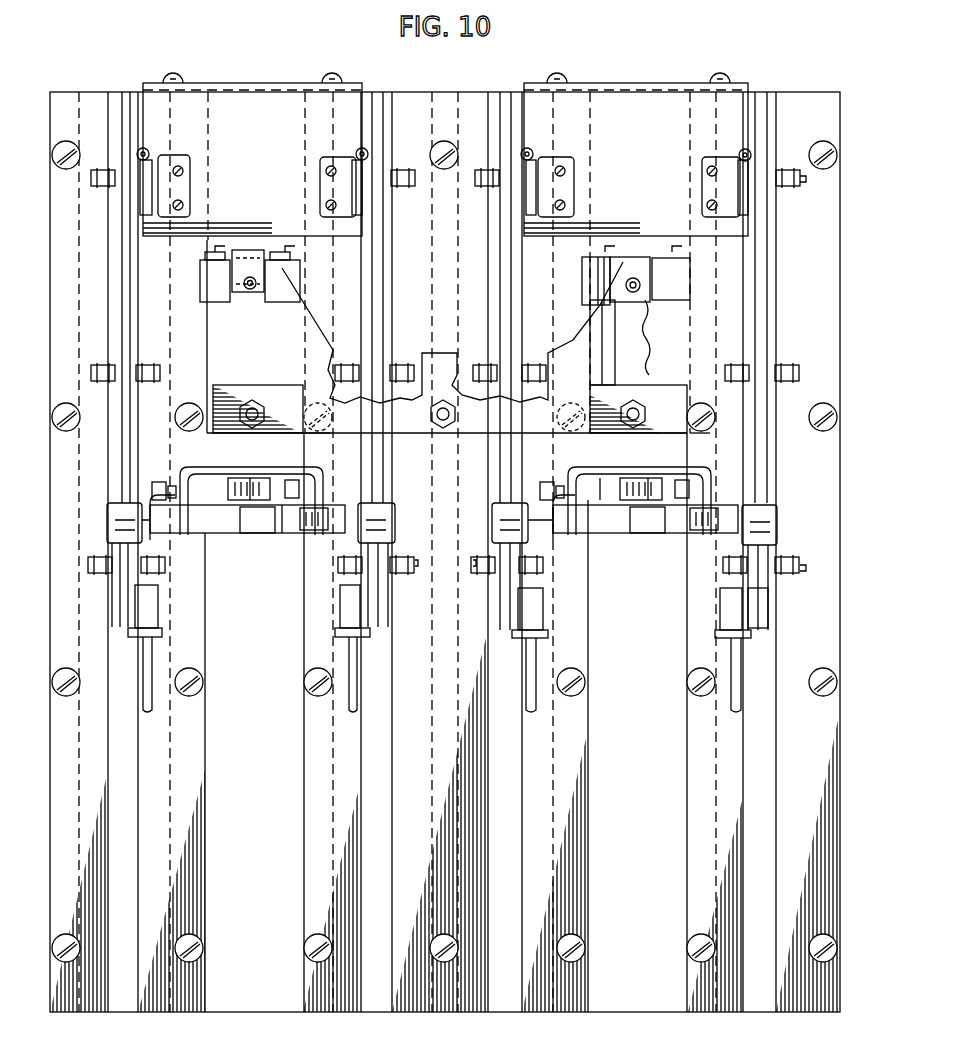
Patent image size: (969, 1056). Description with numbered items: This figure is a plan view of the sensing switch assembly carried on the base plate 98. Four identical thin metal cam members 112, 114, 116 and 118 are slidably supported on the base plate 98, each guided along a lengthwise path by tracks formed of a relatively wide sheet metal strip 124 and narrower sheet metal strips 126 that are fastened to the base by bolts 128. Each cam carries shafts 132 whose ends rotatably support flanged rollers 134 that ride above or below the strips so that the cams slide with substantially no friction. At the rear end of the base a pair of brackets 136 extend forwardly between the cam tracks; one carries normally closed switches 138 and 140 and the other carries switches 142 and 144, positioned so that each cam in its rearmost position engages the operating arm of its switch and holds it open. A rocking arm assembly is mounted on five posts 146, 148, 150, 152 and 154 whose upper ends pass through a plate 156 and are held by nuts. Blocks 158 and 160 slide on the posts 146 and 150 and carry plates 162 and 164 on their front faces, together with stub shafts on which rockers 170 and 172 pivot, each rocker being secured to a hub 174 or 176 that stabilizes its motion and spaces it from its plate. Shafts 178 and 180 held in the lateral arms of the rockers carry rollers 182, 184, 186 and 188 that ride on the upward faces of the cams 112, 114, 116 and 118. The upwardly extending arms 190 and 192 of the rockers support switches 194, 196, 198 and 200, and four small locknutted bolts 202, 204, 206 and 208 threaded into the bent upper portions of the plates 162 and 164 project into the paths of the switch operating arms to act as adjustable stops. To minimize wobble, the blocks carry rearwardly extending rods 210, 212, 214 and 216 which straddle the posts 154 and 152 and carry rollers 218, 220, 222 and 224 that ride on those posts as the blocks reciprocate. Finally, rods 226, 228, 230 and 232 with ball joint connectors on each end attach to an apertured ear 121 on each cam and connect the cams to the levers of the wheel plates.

The base plate 98 is at (128, 1012).
The cam member 112 is at (132, 283).
The cam member 114 is at (380, 288).
The cam member 116 is at (508, 284).
The cam member 118 is at (760, 316).
The apertured ear 121 is at (768, 610).
The sheet metal strip 124 is at (438, 1012).
The sheet metal strip 126 is at (318, 1012).
The bolt 128 is at (68, 143).
The shaft 132 is at (800, 180).
The flanged roller 134 is at (400, 187).
The bracket 136 is at (242, 84).
The switch 138 is at (178, 160).
The switch 140 is at (322, 160).
The switch 142 is at (556, 160).
The switch 144 is at (708, 160).
The post 146 is at (252, 405).
The post 148 is at (443, 424).
The post 150 is at (628, 410).
The post 152 is at (633, 293).
The post 154 is at (247, 264).
The plate 156 is at (622, 378).
The block 158 is at (300, 444).
The block 160 is at (706, 430).
The plate 162 is at (236, 470).
The plate 164 is at (700, 478).
The rocker 170 is at (298, 502).
The rocker 172 is at (580, 502).
The hub 174 is at (263, 484).
The hub 176 is at (655, 484).
The shaft 178 is at (222, 535).
The shaft 180 is at (600, 530).
The roller 182 is at (112, 508).
The roller 184 is at (380, 510).
The roller 186 is at (498, 512).
The roller 188 is at (765, 512).
The upwardly extending arm 190 is at (250, 478).
The upwardly extending arm 192 is at (648, 474).
The switch 194 is at (232, 494).
The switch 196 is at (258, 534).
The switch 198 is at (600, 478).
The switch 200 is at (645, 535).
The bolt 202 is at (158, 482).
The bolt 204 is at (330, 502).
The bolt 206 is at (550, 482).
The bolt 208 is at (745, 505).
The rod 210 is at (218, 252).
The rod 212 is at (292, 255).
The rod 214 is at (600, 252).
The rod 216 is at (675, 258).
The roller 218 is at (205, 302).
The roller 220 is at (270, 302).
The roller 222 is at (590, 264).
The roller 224 is at (690, 290).
The rod 226 is at (155, 664).
The rod 228 is at (340, 657).
The rod 230 is at (540, 665).
The rod 232 is at (735, 652).